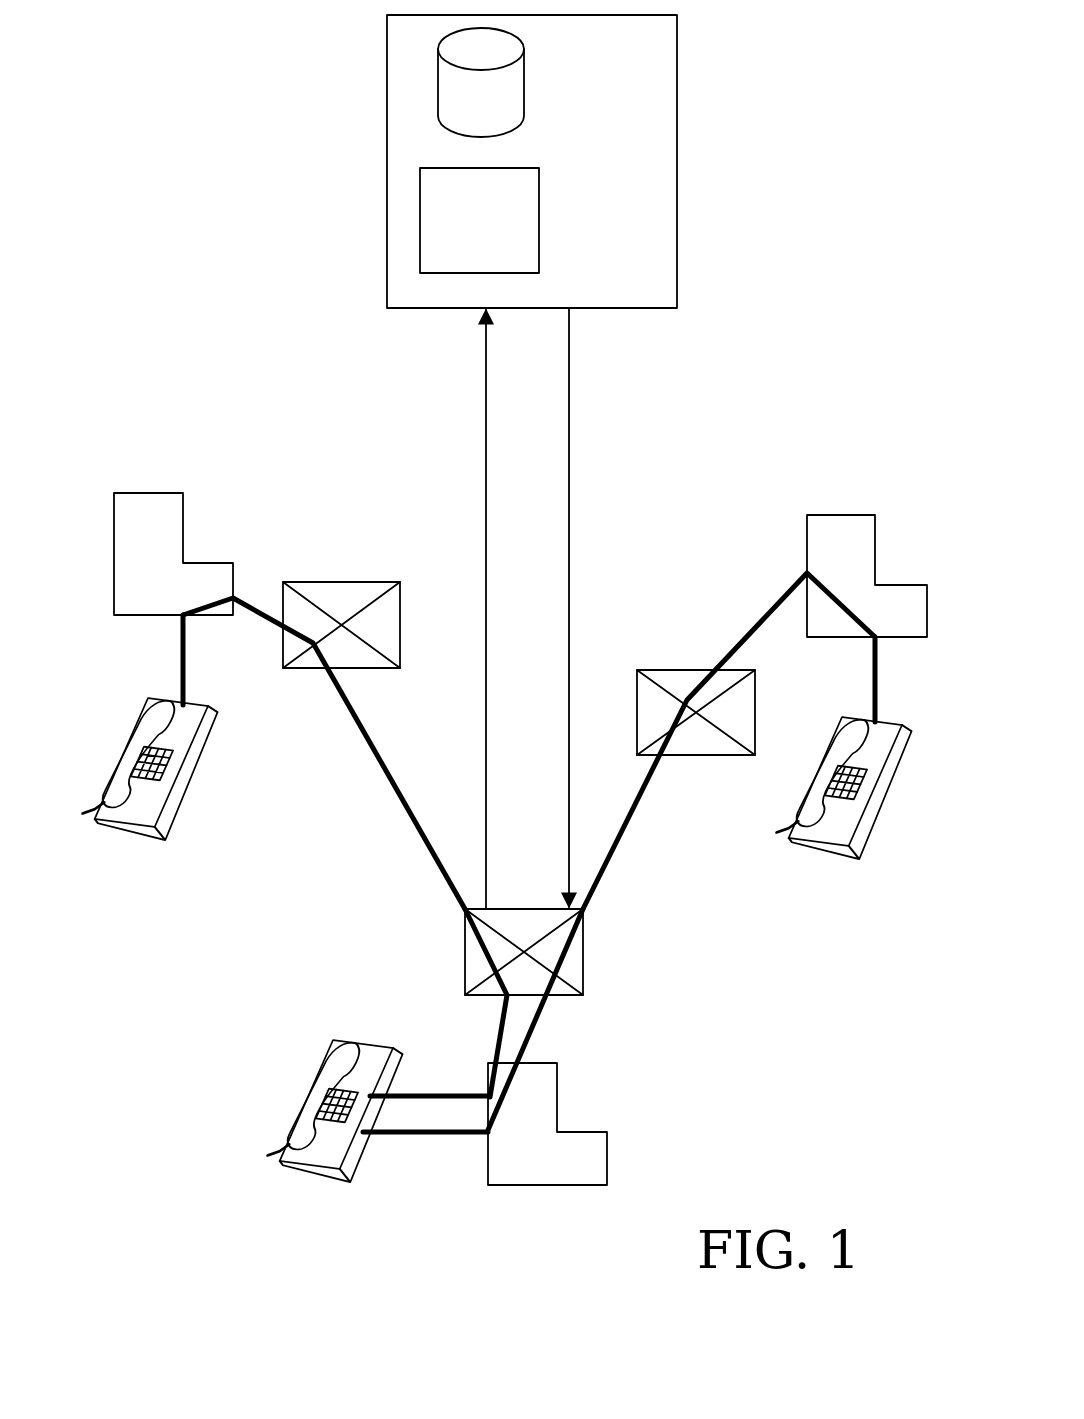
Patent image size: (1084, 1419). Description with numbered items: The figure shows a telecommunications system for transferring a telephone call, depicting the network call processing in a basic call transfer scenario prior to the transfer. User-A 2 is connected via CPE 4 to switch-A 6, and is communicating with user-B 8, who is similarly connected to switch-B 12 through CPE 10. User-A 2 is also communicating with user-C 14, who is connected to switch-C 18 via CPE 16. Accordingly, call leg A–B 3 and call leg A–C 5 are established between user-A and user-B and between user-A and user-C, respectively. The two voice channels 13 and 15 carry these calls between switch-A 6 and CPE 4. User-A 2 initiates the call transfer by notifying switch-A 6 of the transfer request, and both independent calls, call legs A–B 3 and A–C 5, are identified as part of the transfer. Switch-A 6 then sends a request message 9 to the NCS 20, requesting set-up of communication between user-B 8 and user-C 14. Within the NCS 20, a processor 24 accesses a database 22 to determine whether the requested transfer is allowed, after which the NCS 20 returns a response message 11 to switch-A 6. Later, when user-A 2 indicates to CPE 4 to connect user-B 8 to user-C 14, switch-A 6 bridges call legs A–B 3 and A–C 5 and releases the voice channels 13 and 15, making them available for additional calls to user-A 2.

The user-A 2 is at (311, 1143).
The call leg A–B 3 is at (324, 768).
The CPE 4 is at (529, 1124).
The call leg A–C 5 is at (729, 741).
The switch-A 6 is at (563, 922).
The user-B 8 is at (152, 796).
The request message 9 is at (456, 609).
The CPE 10 is at (164, 570).
The response message 11 is at (609, 607).
The switch-B 12 is at (363, 585).
The voice channel 13 is at (465, 1003).
The user-C 14 is at (852, 829).
The voice channel 15 is at (553, 1019).
The CPE 16 is at (867, 584).
The switch-C 18 is at (678, 676).
The NCS 20 is at (601, 161).
The database 22 is at (446, 82).
The processor 24 is at (472, 220).